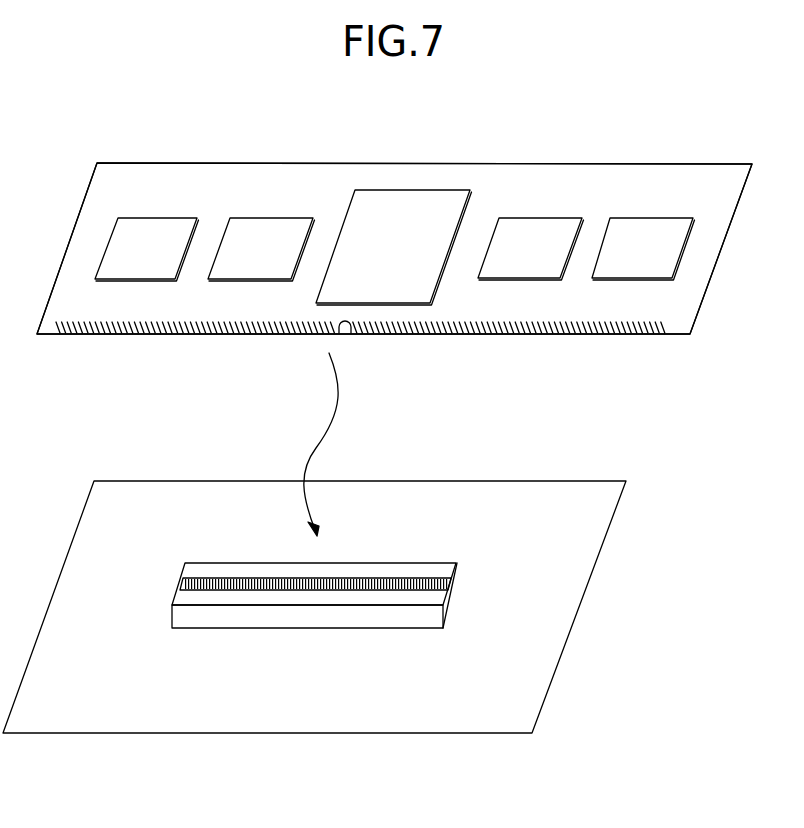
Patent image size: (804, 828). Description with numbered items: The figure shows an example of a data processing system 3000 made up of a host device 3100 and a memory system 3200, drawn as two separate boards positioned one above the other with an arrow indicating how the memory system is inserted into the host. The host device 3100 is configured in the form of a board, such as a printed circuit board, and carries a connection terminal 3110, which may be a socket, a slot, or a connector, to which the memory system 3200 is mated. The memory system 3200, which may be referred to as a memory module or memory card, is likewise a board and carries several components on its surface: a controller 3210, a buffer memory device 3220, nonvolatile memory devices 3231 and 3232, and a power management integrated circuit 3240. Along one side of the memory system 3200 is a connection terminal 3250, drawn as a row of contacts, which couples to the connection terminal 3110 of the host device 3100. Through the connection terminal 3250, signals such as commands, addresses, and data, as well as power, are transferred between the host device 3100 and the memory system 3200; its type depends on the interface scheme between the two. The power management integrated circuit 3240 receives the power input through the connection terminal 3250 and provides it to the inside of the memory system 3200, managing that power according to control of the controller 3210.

The data processing system 3000 is at (218, 123).
The host device 3100 is at (314, 607).
The connection terminal 3110 is at (470, 556).
The memory system 3200 is at (394, 248).
The controller 3210 is at (394, 247).
The buffer memory device 3220 is at (261, 249).
The nonvolatile memory device 3231 is at (531, 249).
The nonvolatile memory device 3232 is at (643, 249).
The power management integrated circuit 3240 is at (147, 249).
The connection terminal 3250 is at (80, 336).